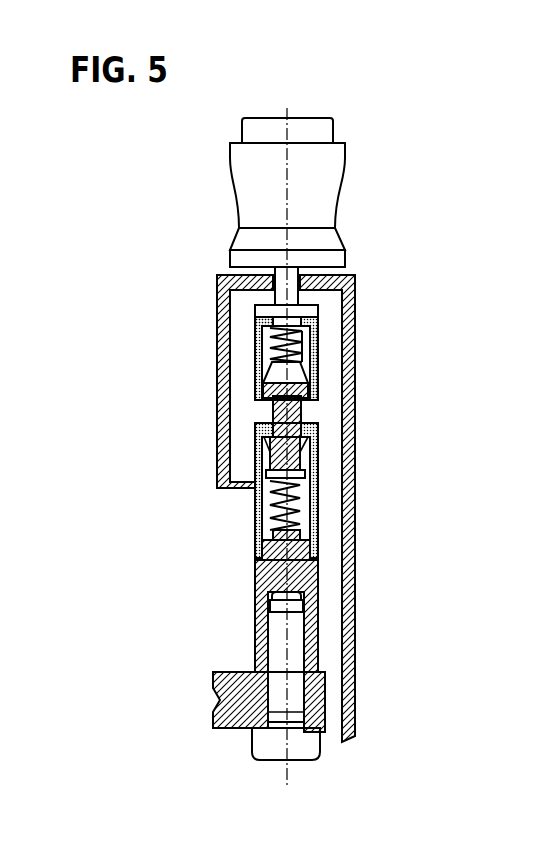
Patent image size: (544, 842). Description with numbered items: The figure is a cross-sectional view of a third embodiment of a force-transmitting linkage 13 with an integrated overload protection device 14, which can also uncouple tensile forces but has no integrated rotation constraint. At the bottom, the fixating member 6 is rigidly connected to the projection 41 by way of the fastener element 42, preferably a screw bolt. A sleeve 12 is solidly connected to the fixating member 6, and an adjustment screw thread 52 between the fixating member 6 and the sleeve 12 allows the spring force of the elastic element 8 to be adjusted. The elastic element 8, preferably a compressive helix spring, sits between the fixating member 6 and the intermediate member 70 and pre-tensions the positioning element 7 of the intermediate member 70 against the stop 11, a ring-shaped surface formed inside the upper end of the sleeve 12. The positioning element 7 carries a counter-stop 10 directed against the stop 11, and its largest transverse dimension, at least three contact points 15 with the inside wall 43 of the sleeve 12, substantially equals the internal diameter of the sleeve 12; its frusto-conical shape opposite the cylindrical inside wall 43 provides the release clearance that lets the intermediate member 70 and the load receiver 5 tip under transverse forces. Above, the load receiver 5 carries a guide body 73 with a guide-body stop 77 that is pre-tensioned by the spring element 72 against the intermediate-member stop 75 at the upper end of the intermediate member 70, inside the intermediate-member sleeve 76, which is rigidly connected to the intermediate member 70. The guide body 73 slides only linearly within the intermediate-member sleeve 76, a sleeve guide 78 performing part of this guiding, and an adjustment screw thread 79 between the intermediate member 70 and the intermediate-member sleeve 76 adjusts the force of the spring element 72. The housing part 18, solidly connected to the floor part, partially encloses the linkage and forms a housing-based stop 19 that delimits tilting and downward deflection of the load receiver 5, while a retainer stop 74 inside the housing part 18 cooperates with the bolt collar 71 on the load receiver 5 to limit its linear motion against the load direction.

The load receiver 5 is at (314, 213).
The housing-based stop 19 is at (330, 277).
The housing part 18 is at (343, 423).
The retainer stop 74 is at (257, 304).
The bolt collar 71 is at (256, 314).
The sleeve guide 78 is at (258, 322).
The intermediate-member sleeve 76 is at (258, 337).
The spring element 72 is at (313, 350).
The guide-body stop 77 is at (320, 362).
The guide body 73 is at (262, 392).
The adjustment screw thread 79 is at (320, 383).
The intermediate-member stop 75 is at (262, 416).
The intermediate member 70 is at (262, 432).
The positioning element 7 is at (258, 458).
The counter-stop 10 is at (387, 405).
The contact points 15 is at (260, 440).
The stop 11 is at (392, 478).
The elastic element 8 is at (320, 492).
The sleeve 12 is at (319, 512).
The inside wall 43 is at (322, 541).
The adjustment screw thread 52 is at (256, 552).
The fixating member 6 is at (303, 590).
The projection 41 is at (222, 708).
The fastener element 42 is at (260, 743).
The overload protection device 14 is at (244, 508).
The force-transmitting linkage 13 is at (228, 602).